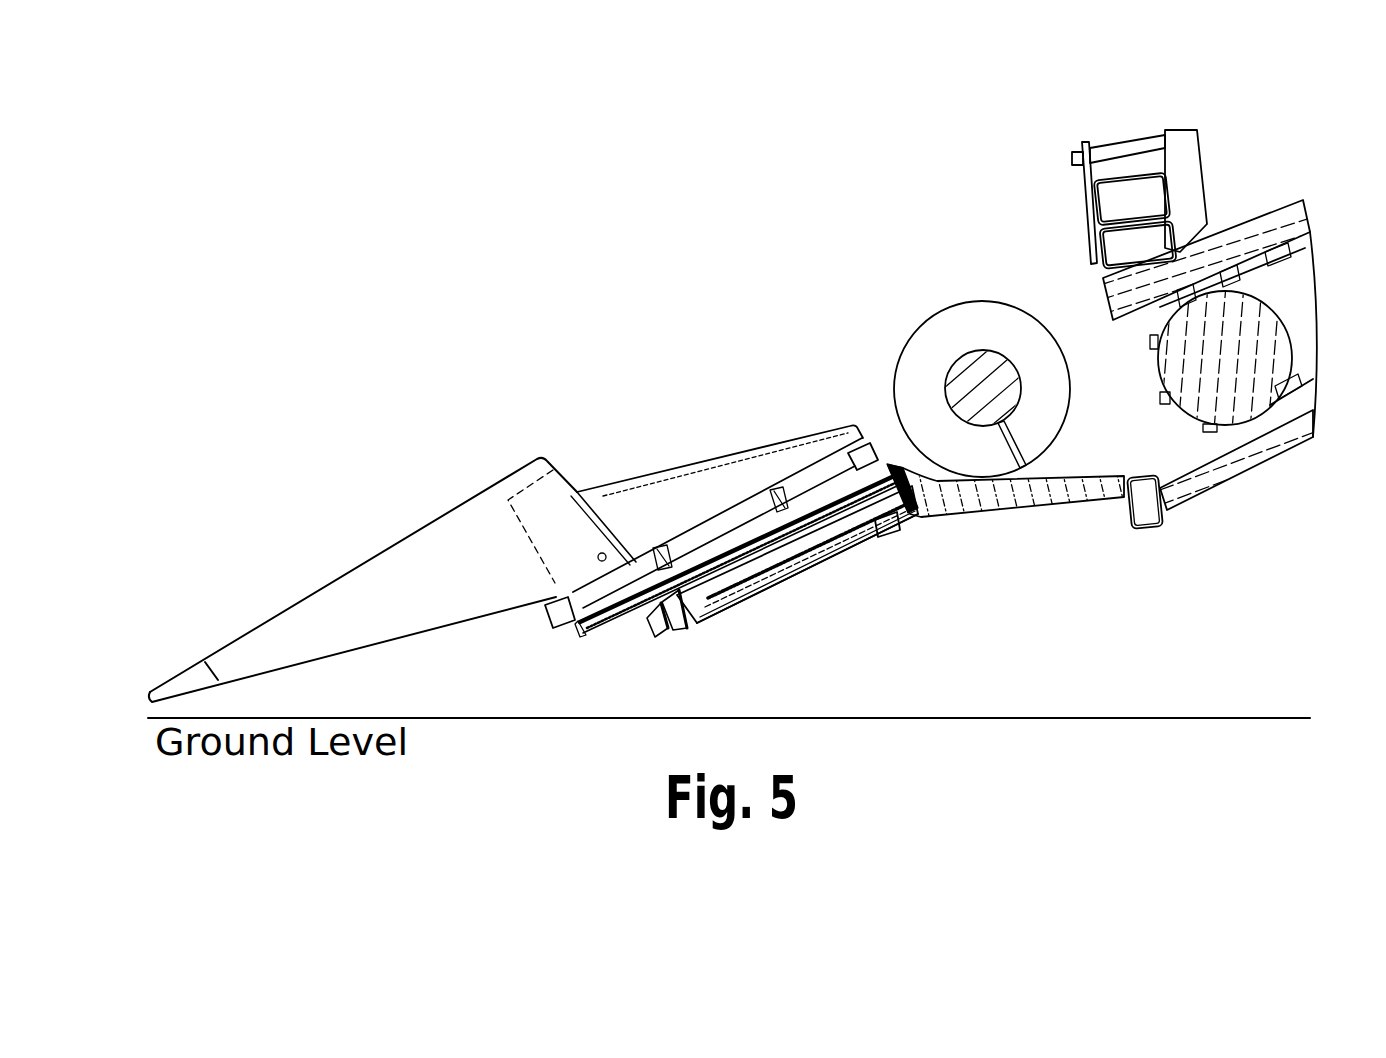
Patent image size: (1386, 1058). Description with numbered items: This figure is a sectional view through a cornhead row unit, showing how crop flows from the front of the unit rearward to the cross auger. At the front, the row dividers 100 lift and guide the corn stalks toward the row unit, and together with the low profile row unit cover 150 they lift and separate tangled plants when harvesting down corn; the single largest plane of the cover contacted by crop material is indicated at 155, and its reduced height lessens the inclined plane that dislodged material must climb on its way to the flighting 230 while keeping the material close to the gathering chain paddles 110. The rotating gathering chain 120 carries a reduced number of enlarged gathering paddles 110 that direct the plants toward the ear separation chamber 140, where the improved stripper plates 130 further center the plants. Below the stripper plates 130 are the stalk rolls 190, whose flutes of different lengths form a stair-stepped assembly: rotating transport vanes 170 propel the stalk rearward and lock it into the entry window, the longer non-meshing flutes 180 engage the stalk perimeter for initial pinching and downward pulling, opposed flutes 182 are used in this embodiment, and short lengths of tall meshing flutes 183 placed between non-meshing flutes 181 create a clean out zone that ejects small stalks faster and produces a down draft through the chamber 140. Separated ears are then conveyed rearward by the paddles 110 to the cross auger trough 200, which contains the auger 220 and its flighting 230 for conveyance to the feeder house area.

The dividers 100 is at (390, 600).
The gathering paddles 110 is at (555, 613).
The gathering chain 120 is at (623, 587).
The stripper plates 130 is at (691, 573).
The ear separation chamber 140 is at (735, 480).
The row unit cover 150 is at (780, 462).
The largest plane contacted by crop material 155 is at (816, 435).
The transport vanes 170 is at (665, 633).
The non-meshing flutes 180 is at (718, 614).
The non-meshing flutes 181 is at (758, 556).
The opposed flutes 182 is at (793, 558).
The meshing flutes 183 is at (893, 515).
The stalk rolls 190 is at (845, 535).
The cross auger trough 200 is at (960, 482).
The auger 220 is at (915, 397).
The flighting 230 is at (987, 387).